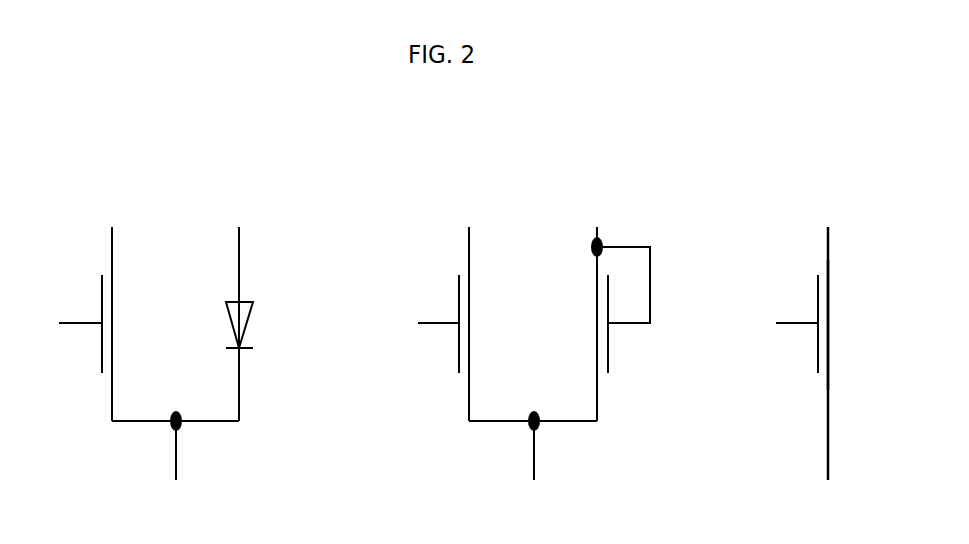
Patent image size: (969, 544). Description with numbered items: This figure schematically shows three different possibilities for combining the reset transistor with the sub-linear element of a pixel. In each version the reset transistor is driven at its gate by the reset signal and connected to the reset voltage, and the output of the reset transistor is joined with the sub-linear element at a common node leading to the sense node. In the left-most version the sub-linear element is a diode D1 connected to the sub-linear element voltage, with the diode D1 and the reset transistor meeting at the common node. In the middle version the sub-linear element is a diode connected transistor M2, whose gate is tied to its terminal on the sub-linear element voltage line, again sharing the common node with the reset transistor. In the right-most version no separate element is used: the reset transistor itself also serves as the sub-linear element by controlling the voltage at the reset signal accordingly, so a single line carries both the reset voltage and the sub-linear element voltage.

The diode connected transistor M2 is at (604, 313).
The diode D1 is at (256, 322).